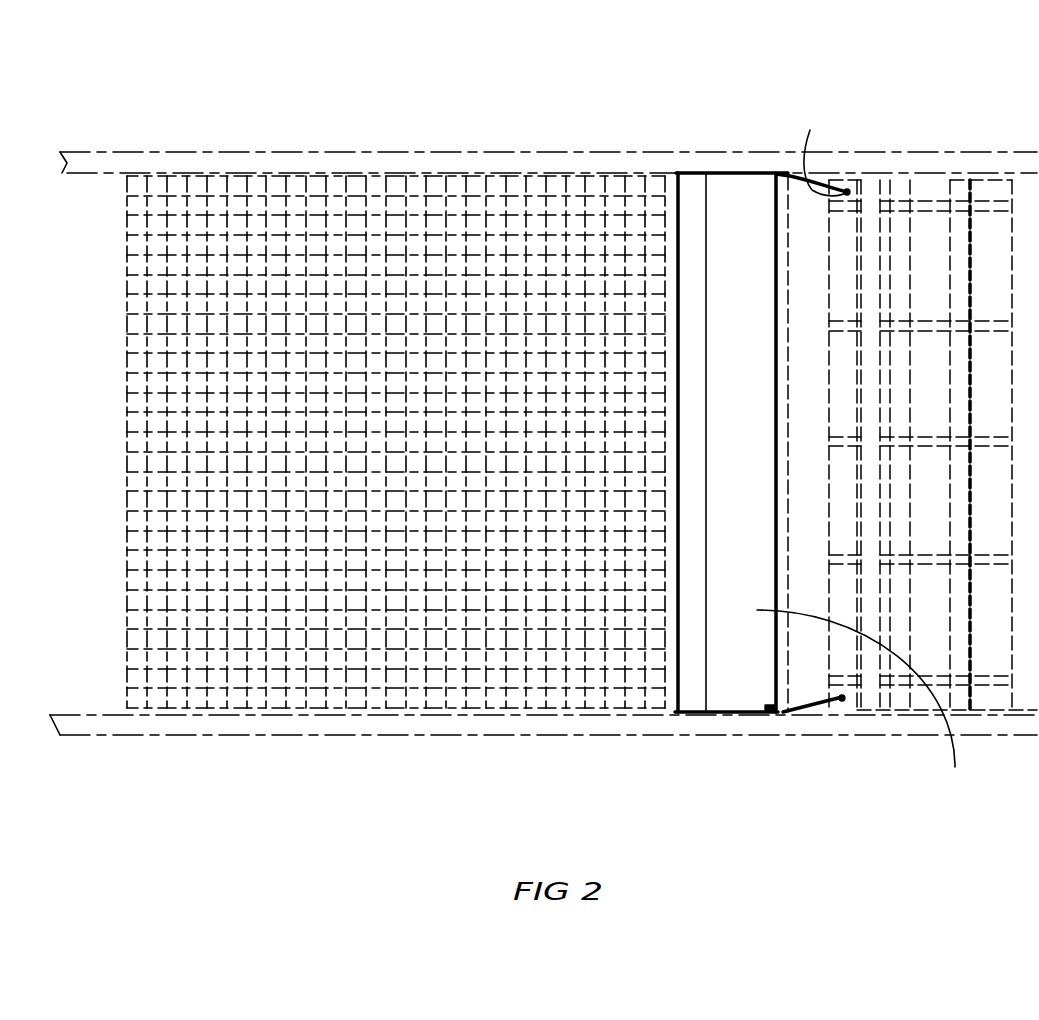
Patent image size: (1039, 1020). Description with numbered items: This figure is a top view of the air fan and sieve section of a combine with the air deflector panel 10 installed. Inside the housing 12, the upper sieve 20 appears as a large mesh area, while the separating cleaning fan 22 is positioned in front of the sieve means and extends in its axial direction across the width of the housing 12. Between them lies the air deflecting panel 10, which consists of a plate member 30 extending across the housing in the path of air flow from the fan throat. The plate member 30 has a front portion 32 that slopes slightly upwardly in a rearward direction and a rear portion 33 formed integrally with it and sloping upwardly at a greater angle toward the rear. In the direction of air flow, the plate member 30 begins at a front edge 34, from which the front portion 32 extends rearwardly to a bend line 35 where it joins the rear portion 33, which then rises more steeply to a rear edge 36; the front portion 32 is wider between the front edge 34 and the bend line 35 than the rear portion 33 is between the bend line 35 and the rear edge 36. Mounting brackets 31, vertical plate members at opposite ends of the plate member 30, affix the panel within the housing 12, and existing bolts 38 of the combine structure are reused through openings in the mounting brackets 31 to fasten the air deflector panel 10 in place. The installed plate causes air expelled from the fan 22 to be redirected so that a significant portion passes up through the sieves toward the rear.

The air deflecting panel 10 is at (772, 722).
The housing 12 is at (266, 152).
The upper sieve 20 is at (525, 220).
The separating cleaning fan 22 is at (975, 212).
The plate member 30 is at (733, 667).
The mounting brackets 31 is at (847, 192).
The front portion 32 is at (720, 207).
The rear portion 33 is at (690, 195).
The front edge 34 is at (862, 705).
The bend line 35 is at (704, 690).
The rear edge 36 is at (675, 668).
The existing bolts 38 is at (777, 172).